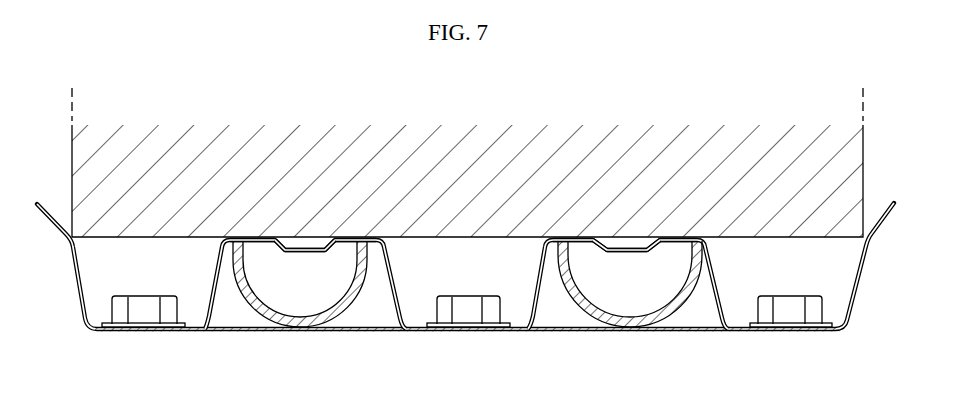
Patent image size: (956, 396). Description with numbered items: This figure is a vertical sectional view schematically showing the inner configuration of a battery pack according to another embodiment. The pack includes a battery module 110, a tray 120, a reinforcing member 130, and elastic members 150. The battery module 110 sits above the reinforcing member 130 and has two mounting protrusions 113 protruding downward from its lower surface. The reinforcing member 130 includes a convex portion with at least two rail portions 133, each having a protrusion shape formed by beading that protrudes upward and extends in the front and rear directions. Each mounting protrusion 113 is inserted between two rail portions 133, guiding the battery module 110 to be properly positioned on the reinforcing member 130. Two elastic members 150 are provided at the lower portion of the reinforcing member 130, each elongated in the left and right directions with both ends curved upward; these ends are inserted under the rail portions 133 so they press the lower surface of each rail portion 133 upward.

The battery module 110 is at (460, 148).
The mounting protrusion 113 is at (302, 249).
The tray 120 is at (107, 344).
The reinforcing member 130 is at (206, 269).
The rail portion 133 is at (235, 239).
The elastic member 150 is at (353, 295).